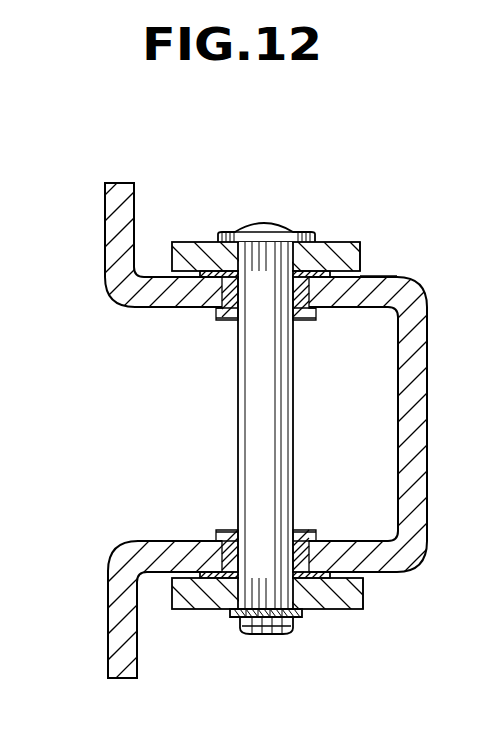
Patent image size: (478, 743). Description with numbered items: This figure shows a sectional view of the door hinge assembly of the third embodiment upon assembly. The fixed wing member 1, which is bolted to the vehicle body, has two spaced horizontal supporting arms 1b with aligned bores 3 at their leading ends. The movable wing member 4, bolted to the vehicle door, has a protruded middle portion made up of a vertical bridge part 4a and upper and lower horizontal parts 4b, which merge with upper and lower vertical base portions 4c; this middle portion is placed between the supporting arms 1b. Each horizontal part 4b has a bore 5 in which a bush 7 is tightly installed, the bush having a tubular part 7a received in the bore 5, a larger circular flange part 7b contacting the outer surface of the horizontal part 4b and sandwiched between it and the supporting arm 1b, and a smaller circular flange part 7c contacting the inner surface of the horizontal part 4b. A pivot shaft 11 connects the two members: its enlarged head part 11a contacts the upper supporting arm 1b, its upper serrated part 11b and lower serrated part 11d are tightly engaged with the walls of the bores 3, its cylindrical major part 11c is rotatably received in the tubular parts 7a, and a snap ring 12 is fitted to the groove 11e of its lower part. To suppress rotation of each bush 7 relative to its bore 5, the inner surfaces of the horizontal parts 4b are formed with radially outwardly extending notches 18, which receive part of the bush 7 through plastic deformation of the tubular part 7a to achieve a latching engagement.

The fixed wing member 1 is at (362, 258).
The supporting arm 1b is at (358, 256).
The bore 3 is at (286, 234).
The movable wing member 4 is at (106, 270).
The vertical bridge part 4a is at (428, 312).
The horizontal part 4b is at (153, 308).
The vertical base portion 4c is at (105, 231).
The bore 5 is at (293, 335).
The bush 7 is at (224, 268).
The tubular part 7a is at (200, 308).
The larger circular flange part 7b is at (174, 308).
The smaller circular flange part 7c is at (316, 314).
The pivot shaft 11 is at (263, 424).
The enlarged head part 11a is at (226, 240).
The upper serrated part 11b is at (266, 230).
The cylindrical major part 11c is at (238, 420).
The lower serrated part 11d is at (275, 634).
The groove 11e is at (250, 637).
The snap ring 12 is at (300, 611).
The notch 18 is at (224, 320).